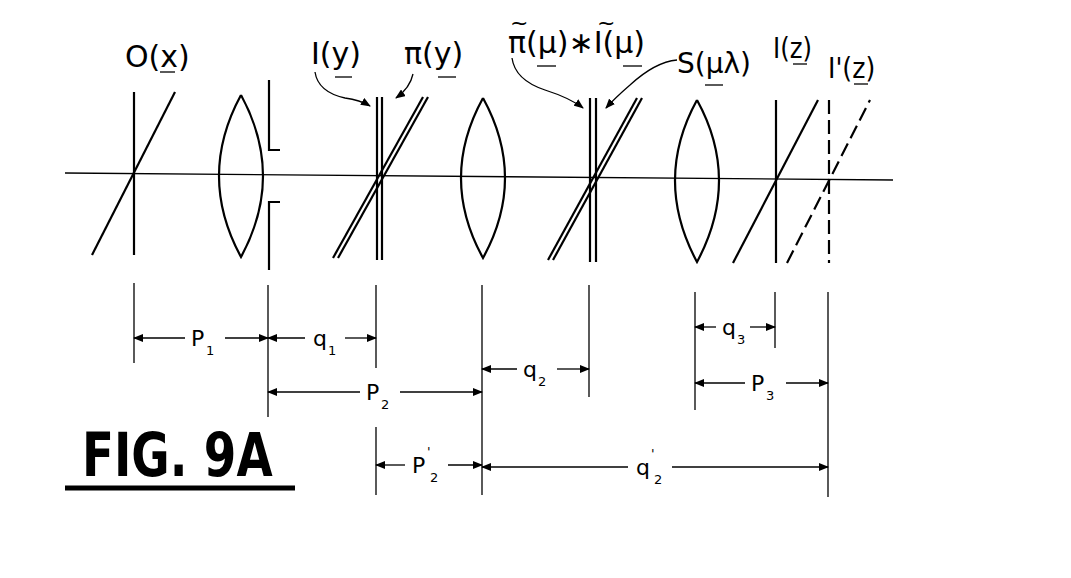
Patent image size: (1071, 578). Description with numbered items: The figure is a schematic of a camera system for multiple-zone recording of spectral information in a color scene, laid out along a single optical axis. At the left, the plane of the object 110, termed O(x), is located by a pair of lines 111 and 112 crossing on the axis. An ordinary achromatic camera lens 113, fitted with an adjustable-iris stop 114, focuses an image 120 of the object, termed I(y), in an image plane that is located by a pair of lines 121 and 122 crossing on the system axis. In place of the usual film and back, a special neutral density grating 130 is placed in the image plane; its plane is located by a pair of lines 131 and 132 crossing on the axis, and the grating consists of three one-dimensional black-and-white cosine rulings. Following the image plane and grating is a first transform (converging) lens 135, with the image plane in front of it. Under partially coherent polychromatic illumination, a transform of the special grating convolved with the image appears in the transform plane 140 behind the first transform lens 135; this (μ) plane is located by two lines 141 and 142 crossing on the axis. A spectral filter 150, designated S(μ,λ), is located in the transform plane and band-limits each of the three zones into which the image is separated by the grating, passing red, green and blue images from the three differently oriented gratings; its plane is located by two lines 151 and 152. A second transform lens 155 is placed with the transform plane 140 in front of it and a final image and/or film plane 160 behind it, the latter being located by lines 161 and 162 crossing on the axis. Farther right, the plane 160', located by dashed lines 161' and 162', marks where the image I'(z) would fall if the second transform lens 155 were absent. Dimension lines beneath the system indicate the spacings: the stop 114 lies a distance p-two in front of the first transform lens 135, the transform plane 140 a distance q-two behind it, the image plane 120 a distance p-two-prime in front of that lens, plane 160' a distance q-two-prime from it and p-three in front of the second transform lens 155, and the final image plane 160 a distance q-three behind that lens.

The object 110 is at (127, 180).
The line 111 is at (134, 236).
The line 112 is at (155, 131).
The achromatic camera lens 113 is at (220, 197).
The adjustable-iris stop 114 is at (270, 163).
The image 120 is at (369, 183).
The line 121 is at (376, 145).
The line 122 is at (349, 229).
The special neutral density grating 130 is at (393, 181).
The line 131 is at (383, 243).
The line 132 is at (404, 142).
The first transform lens 135 is at (497, 127).
The transform plane 140 is at (582, 183).
The line 141 is at (589, 146).
The line 142 is at (559, 241).
The spectral filter 150 is at (600, 182).
The line 151 is at (598, 243).
The line 152 is at (616, 148).
The second transform lens 155 is at (712, 131).
The final image plane 160 is at (746, 203).
The line 161 is at (756, 181).
The line 162 is at (764, 181).
The plane 160' is at (869, 206).
The dashed line 161' is at (811, 181).
The dashed line 162' is at (839, 181).